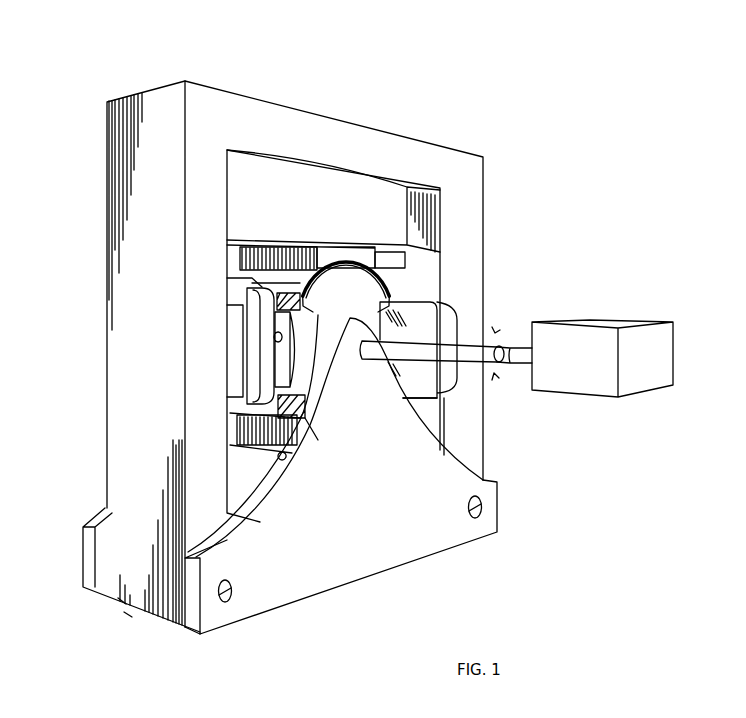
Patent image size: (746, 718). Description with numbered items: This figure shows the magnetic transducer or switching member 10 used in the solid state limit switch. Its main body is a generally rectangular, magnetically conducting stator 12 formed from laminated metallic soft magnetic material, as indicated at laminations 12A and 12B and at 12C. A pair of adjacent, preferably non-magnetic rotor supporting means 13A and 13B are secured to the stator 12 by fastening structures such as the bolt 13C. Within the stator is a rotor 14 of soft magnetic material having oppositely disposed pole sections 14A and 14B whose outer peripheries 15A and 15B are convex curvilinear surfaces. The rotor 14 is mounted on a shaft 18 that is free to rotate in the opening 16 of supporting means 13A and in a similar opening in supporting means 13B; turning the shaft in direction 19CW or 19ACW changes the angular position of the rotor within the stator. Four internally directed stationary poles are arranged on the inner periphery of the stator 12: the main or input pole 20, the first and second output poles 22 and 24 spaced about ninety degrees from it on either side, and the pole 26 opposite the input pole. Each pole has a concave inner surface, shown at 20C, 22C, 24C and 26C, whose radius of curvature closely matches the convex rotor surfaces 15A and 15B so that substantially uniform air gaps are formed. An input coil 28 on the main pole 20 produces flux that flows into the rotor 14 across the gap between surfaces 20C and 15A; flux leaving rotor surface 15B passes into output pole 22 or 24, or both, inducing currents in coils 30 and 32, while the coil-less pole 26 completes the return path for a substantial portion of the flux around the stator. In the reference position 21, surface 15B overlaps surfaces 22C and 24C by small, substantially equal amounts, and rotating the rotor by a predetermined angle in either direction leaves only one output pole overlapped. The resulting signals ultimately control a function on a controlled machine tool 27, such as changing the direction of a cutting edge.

The switching member 10 is at (189, 40).
The stator 12 is at (253, 96).
The laminated soft magnetic material 12A is at (122, 604).
The laminated soft magnetic material 12B is at (127, 617).
The frame front bottom edge 12C is at (178, 628).
The rotor supporting means 13A is at (385, 562).
The rotor supporting means 13B is at (83, 567).
The fastening structure 13C is at (234, 604).
The rotor 14 is at (302, 292).
The magnetic pole section 14A is at (240, 281).
The magnetic pole section 14B is at (305, 406).
The outer periphery 15A is at (318, 280).
The outer periphery 15B is at (310, 418).
The opening 16 is at (360, 356).
The shaft 18 is at (478, 372).
The clockwise direction 19CW is at (495, 333).
The anticlockwise direction 19ACW is at (494, 373).
The main pole 20 is at (377, 259).
The concave inner surface 20C is at (283, 262).
The reference position 21 is at (345, 263).
The first stator output pole 22 is at (386, 330).
The concave inner surface 22C is at (384, 302).
The second stator output pole 24 is at (270, 366).
The concave inner surface 24C is at (278, 326).
The magnetic pole 26 is at (270, 480).
The concave inner surface 26C is at (282, 452).
The controlled machine tool 27 is at (662, 326).
The input coil 28 is at (392, 190).
The coil 30 is at (446, 395).
The coil 32 is at (243, 378).